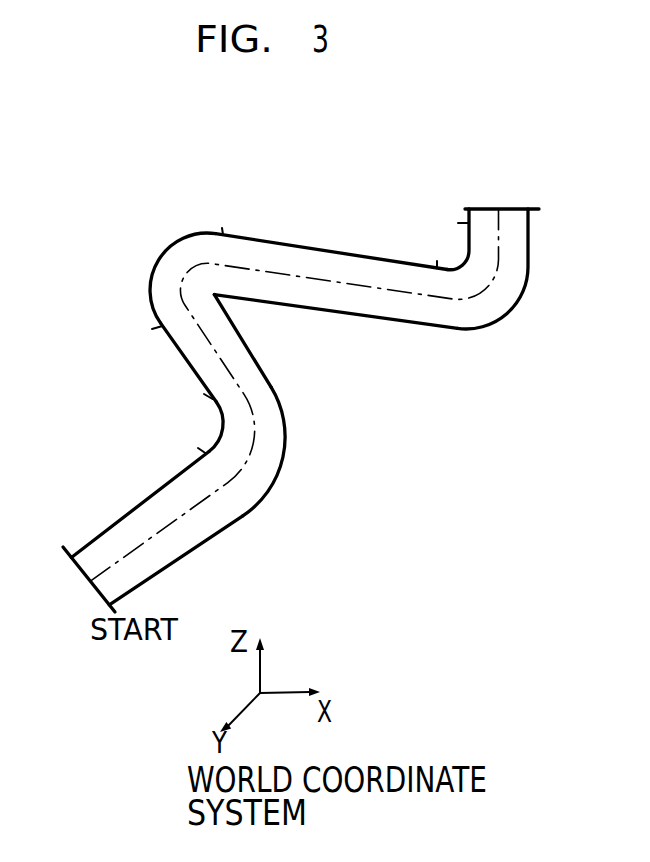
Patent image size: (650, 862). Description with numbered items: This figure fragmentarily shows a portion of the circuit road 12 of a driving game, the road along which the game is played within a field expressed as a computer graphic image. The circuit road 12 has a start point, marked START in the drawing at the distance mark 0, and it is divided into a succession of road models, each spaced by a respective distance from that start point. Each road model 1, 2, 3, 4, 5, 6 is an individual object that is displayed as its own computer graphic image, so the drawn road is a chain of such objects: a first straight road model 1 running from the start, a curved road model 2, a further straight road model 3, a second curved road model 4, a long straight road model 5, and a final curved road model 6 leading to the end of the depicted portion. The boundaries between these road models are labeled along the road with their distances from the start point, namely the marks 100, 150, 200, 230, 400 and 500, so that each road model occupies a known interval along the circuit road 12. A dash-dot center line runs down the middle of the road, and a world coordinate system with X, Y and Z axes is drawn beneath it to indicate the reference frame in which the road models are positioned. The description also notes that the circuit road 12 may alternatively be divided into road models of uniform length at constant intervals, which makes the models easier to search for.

The circuit road 12 is at (137, 210).
The road model 1 is at (130, 503).
The road model 2 is at (217, 423).
The road model 3 is at (178, 358).
The road model 4 is at (150, 272).
The road model 5 is at (327, 242).
The road model 6 is at (462, 238).
The start position mark 0 is at (56, 532).
The position mark 100 is at (181, 442).
The position mark 150 is at (187, 401).
The position mark 200 is at (138, 334).
The position mark 230 is at (228, 217).
The position mark 400 is at (434, 252).
The position mark 500 is at (444, 224).